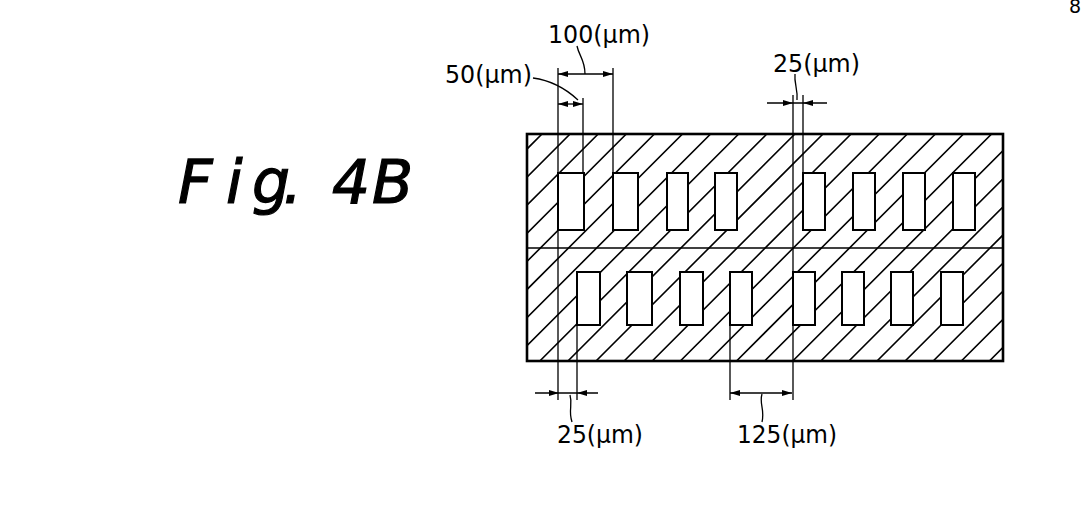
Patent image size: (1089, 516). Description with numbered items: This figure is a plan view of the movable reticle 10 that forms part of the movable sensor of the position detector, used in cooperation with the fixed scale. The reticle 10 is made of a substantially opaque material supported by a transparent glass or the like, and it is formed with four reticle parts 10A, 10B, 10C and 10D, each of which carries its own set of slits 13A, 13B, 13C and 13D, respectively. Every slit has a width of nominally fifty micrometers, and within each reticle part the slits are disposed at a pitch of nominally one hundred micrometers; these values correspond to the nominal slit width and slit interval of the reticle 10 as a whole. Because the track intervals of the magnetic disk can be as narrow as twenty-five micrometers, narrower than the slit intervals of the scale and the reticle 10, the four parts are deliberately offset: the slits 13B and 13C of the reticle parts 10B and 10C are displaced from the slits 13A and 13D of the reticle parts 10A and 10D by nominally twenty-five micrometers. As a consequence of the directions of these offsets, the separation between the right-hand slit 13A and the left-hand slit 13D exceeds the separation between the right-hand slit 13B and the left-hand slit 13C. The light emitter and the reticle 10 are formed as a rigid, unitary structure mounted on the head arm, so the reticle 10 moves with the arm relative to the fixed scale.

The reticle 10 is at (985, 374).
The reticle part 10A is at (527, 204).
The reticle part 10B is at (527, 301).
The reticle part 10C is at (1003, 308).
The reticle part 10D is at (1003, 210).
The slits 13A is at (718, 173).
The slits 13B is at (598, 325).
The slits 13C is at (812, 325).
The slits 13D is at (862, 173).